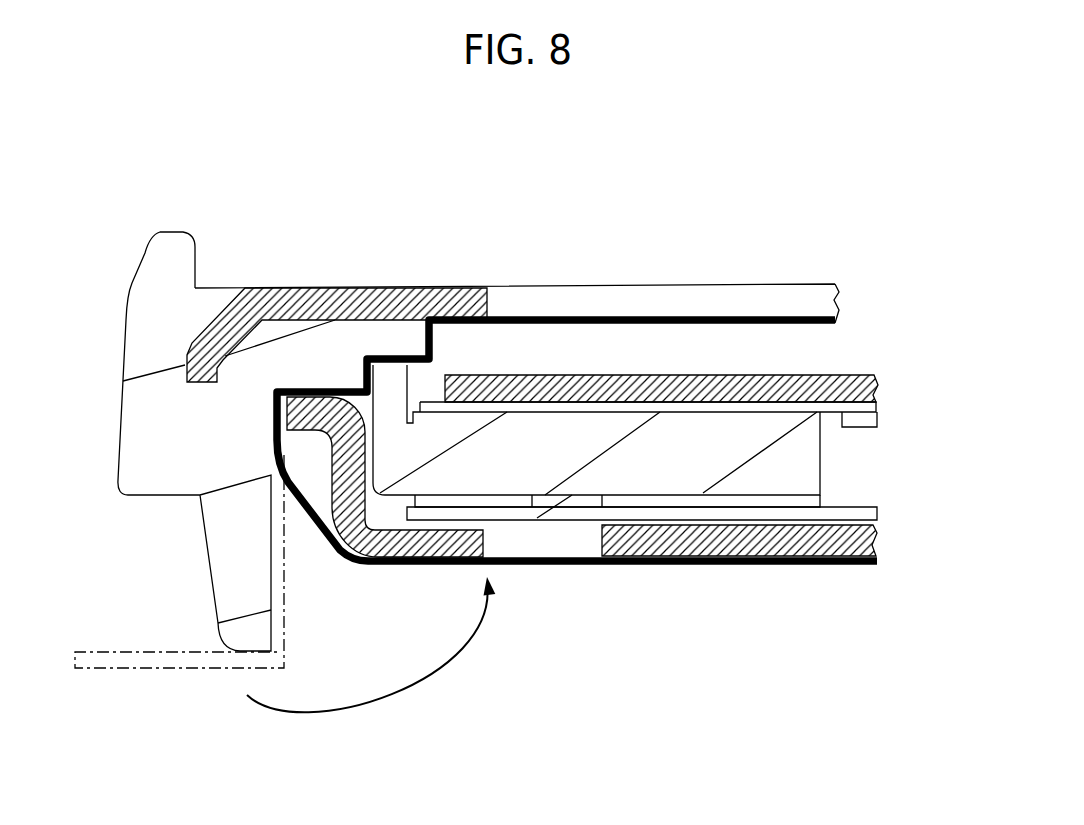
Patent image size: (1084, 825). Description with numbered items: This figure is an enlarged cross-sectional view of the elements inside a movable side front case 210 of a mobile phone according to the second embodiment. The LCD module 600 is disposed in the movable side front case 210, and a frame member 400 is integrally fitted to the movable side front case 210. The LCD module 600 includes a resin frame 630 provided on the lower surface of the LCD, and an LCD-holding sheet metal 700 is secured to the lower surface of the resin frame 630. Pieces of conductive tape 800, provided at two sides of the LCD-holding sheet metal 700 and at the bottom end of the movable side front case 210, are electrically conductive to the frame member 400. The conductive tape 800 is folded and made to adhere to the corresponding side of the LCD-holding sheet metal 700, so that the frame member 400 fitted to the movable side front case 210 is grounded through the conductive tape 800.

The movable side front case 210 is at (118, 344).
The frame member 400 is at (425, 288).
The LCD module 600 is at (892, 358).
The resin frame 630 is at (808, 475).
The LCD-holding sheet metal 700 is at (765, 550).
The conductive tape 800 is at (573, 564).